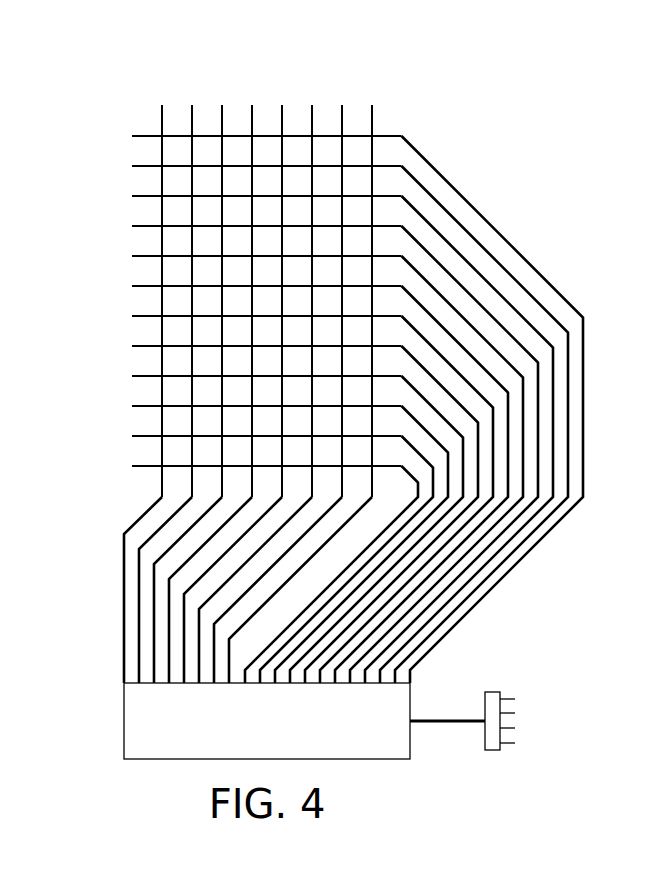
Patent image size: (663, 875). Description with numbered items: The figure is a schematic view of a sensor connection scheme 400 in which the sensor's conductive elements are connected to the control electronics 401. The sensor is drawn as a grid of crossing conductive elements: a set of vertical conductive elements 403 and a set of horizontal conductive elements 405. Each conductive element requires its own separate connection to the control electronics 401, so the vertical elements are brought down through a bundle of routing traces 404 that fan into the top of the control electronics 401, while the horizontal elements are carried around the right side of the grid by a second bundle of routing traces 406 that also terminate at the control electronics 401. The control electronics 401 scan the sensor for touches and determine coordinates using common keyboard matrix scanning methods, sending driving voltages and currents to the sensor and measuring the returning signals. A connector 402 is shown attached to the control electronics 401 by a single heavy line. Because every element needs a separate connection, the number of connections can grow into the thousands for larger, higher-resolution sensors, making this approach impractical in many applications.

The touch sensor system 400 is at (491, 42).
The control electronics 401 is at (314, 735).
The connector 402 is at (502, 704).
The column electrodes 403 is at (197, 280).
The column routing traces 404 is at (197, 568).
The row electrodes 405 is at (212, 279).
The row routing traces 406 is at (414, 388).